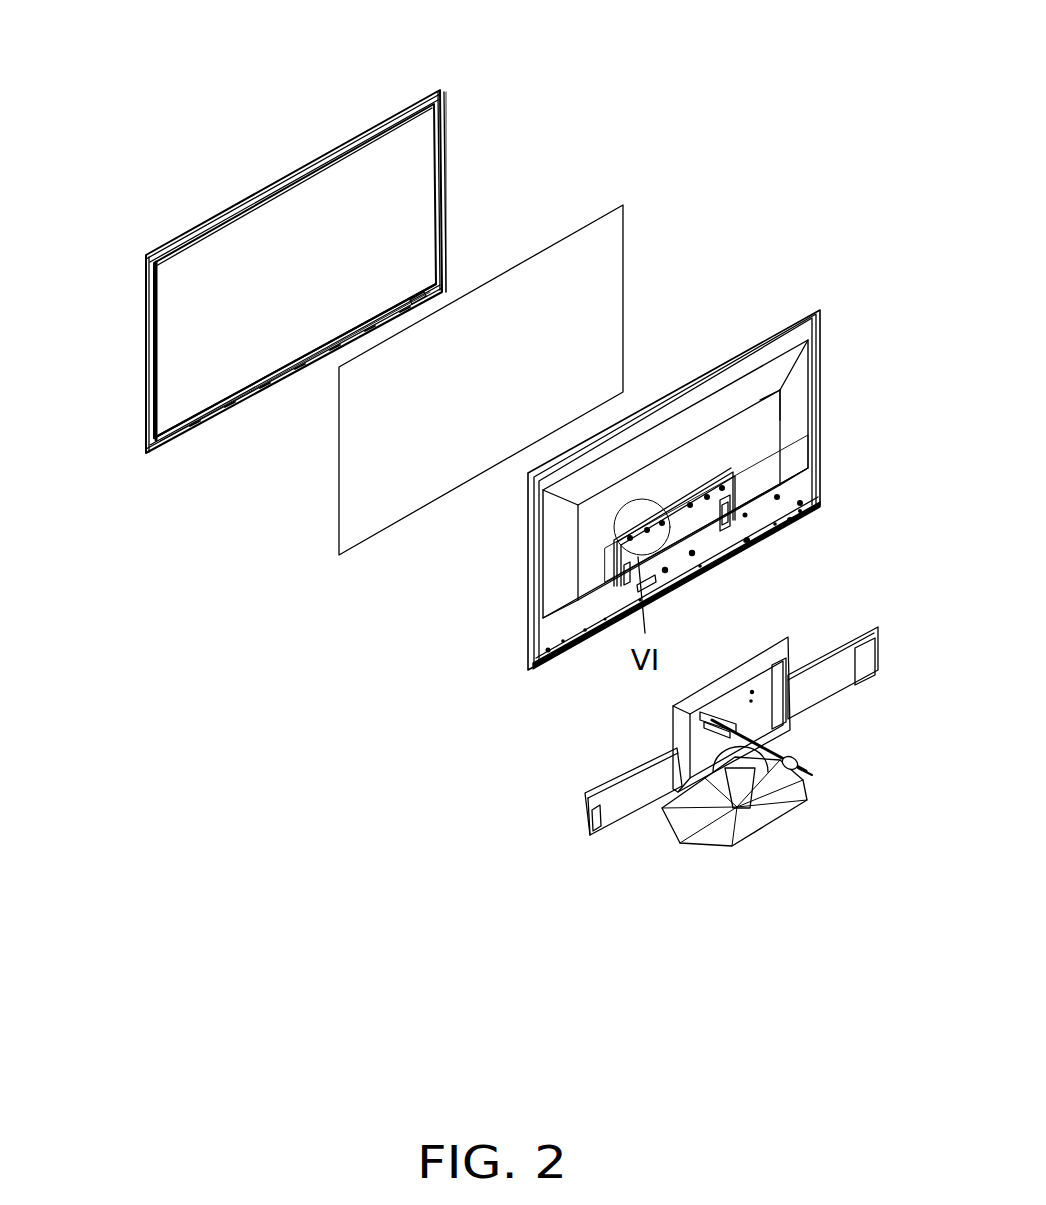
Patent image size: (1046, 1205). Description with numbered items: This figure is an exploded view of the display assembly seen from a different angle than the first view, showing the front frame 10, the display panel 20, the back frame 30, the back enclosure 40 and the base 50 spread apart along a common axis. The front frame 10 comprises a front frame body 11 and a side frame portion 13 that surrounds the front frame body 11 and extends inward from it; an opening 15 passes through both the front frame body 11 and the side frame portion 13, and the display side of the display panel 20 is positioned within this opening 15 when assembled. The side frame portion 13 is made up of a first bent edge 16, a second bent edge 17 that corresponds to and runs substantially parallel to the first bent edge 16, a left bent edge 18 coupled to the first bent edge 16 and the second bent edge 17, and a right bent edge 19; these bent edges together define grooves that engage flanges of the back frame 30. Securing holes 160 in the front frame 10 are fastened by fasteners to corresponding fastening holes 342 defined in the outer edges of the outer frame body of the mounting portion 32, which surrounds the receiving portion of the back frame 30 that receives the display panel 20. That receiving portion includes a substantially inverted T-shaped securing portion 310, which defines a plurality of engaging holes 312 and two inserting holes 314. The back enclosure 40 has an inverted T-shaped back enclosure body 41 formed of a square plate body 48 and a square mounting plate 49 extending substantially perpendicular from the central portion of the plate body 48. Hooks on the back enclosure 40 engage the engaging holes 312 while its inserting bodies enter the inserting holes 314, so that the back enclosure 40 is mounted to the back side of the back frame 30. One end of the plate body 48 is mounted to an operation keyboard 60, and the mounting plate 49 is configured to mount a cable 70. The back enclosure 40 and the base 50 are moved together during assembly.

The front frame 10 is at (323, 137).
The front frame body 11 is at (392, 300).
The side frame portion 13 is at (413, 290).
The opening 15 is at (205, 255).
The first bent edge 16 is at (265, 185).
The second bent edge 17 is at (178, 445).
The left bent edge 18 is at (443, 98).
The right bent edge 19 is at (150, 365).
The securing holes 160 is at (147, 310).
The display panel 20 is at (603, 287).
The back frame 30 is at (784, 300).
The mounting portion 32 is at (770, 373).
The securing portion 310 is at (687, 532).
The engaging holes 312 is at (697, 533).
The inserting holes 314 is at (743, 503).
The fastening holes 342 is at (527, 608).
The back enclosure 40 is at (612, 748).
The back enclosure body 41 is at (760, 758).
The plate body 48 is at (830, 662).
The mounting plate 49 is at (757, 660).
The base 50 is at (718, 835).
The operation keyboard 60 is at (615, 823).
The cable 70 is at (778, 757).